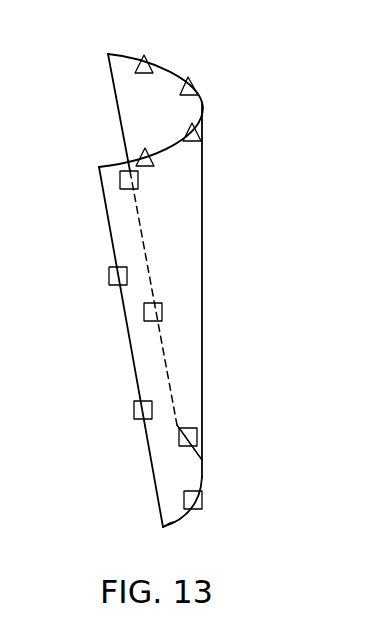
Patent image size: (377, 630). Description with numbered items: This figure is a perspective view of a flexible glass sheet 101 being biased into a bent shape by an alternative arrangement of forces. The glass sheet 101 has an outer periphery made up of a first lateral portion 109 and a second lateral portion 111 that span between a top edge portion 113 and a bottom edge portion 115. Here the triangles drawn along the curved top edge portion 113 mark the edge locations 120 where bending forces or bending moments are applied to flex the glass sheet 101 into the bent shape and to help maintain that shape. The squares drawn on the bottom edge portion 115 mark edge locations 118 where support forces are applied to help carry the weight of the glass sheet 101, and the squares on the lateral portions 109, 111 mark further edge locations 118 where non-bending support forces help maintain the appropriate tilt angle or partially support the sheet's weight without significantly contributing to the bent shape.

The flexible glass sheet 101 is at (232, 99).
The first lateral portion 109 is at (115, 97).
The second lateral portion 111 is at (107, 213).
The top edge portion 113 is at (183, 72).
The bottom edge portion 115 is at (175, 522).
The edge locations 118 is at (134, 410).
The edge locations 120 is at (144, 55).